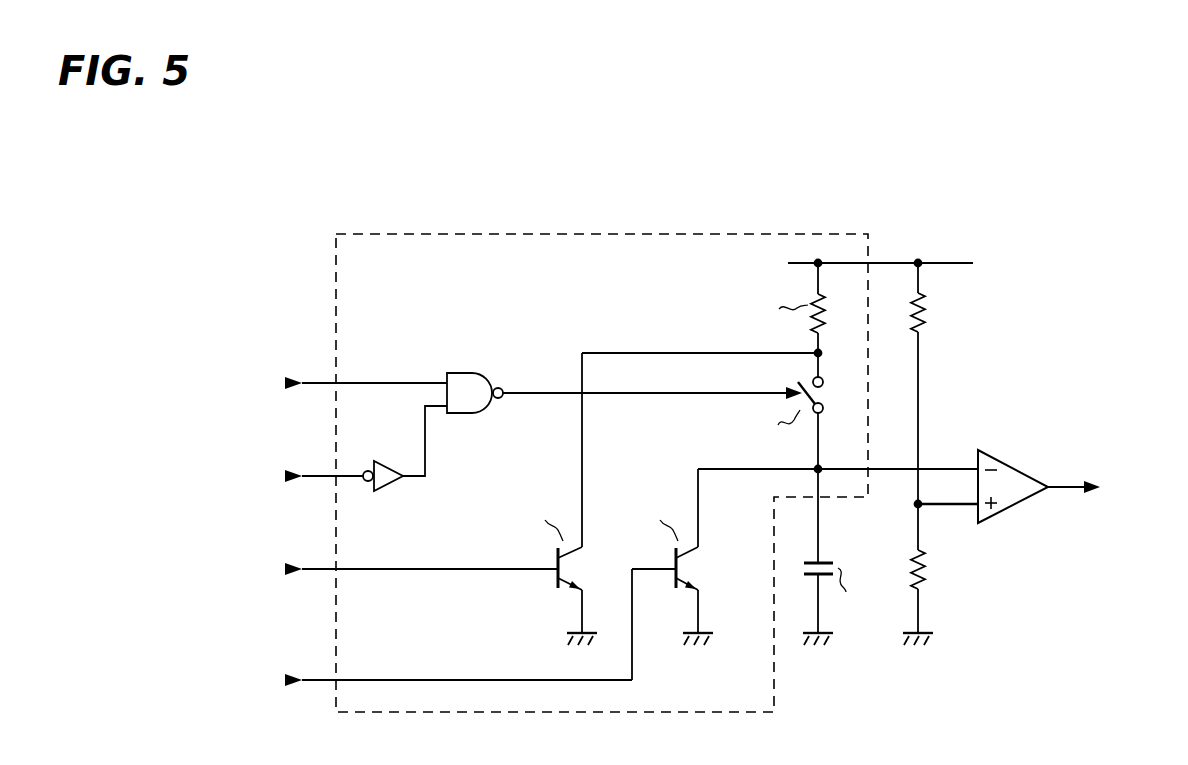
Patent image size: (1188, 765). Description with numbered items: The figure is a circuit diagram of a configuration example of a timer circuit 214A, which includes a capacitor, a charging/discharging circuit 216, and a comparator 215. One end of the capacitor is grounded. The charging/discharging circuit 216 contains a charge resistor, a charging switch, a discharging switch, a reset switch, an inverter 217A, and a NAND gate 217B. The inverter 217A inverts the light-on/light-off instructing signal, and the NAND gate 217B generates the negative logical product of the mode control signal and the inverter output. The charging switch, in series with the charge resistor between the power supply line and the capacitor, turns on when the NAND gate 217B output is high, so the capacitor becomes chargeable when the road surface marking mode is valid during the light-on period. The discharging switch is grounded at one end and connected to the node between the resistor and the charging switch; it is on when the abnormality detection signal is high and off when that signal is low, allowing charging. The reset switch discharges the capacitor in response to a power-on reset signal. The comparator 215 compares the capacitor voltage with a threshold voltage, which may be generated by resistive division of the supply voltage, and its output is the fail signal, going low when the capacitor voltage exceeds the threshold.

The timer circuit 214A is at (1146, 164).
The comparator 215 is at (1010, 462).
The charging/discharging circuit 216 is at (563, 233).
The inverter 217A is at (393, 486).
The NAND gate 217B is at (463, 373).